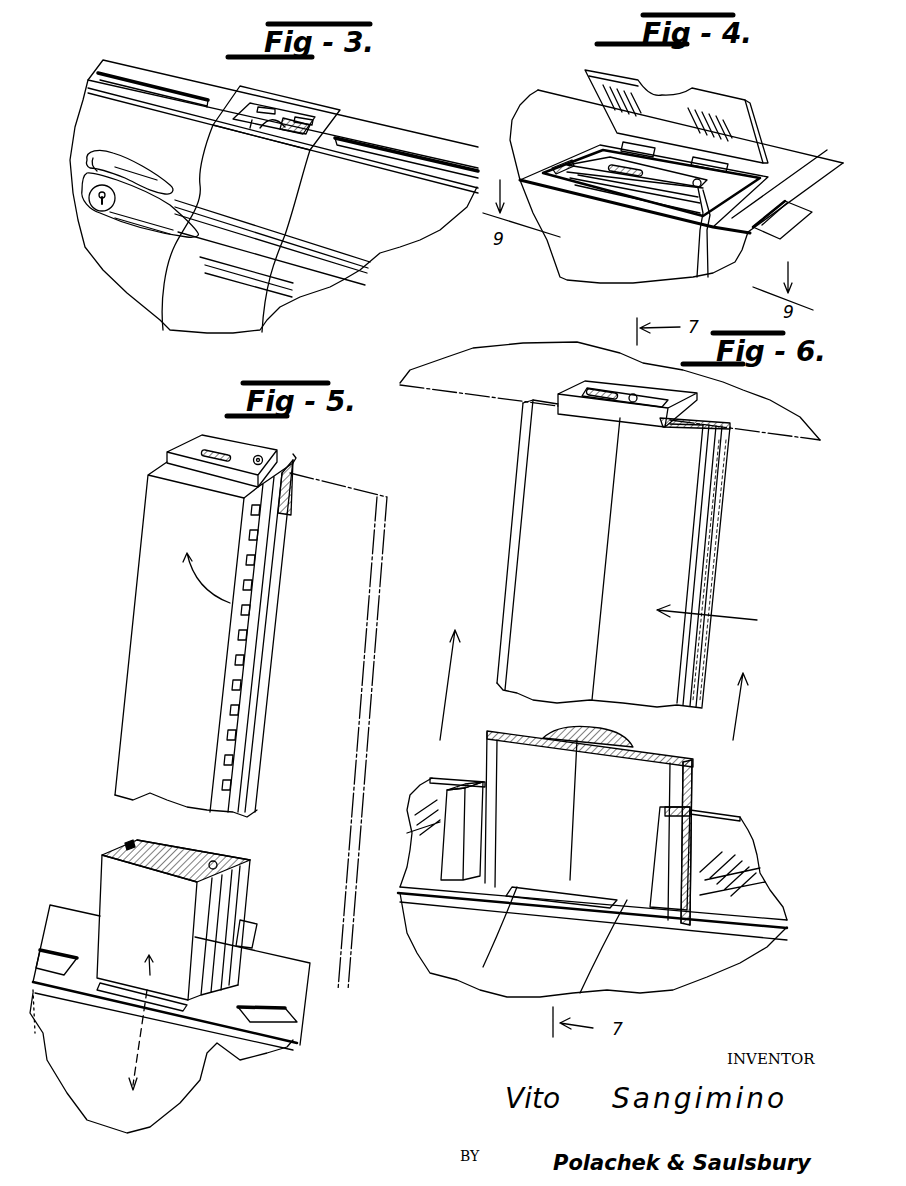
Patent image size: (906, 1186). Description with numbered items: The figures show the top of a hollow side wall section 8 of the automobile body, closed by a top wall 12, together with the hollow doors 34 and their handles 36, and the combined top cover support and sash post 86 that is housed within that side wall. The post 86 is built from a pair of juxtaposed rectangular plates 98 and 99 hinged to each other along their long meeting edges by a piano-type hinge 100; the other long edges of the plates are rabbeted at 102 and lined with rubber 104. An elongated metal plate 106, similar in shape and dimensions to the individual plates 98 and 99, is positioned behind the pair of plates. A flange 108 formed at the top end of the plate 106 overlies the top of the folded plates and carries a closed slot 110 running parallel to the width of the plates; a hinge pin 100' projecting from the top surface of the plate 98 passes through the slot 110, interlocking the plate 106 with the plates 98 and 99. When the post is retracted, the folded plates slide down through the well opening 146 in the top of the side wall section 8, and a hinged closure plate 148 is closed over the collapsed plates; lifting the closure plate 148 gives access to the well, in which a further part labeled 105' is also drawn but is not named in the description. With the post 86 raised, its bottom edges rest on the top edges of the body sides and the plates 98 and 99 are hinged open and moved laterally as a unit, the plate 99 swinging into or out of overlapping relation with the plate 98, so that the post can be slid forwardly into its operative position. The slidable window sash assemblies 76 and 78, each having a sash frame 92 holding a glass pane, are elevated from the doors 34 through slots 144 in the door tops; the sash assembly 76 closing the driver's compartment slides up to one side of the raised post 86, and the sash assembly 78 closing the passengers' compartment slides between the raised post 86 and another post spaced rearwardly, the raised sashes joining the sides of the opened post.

In FIG. 3, the side wall section 8 is at (214, 300).
In FIG. 4, the side wall section 8 is at (570, 267).
In FIG. 5, the side wall section 8 is at (142, 1115).
In FIG. 6, the side wall section 8 is at (507, 980).
In FIG. 3, the top wall 12 is at (332, 120).
In FIG. 4, the top wall 12 is at (790, 153).
In FIG. 6, the top wall 12 is at (610, 391).
In FIG. 3, the hollow door 34 is at (105, 255).
In FIG. 4, the hollow door 34 is at (525, 120).
In FIG. 5, the hollow door 34 is at (45, 1035).
In FIG. 6, the hollow door 34 is at (437, 945).
In FIG. 3, the handle 36 is at (142, 215).
In FIG. 6, the window sash assembly 76 is at (456, 758).
In FIG. 6, the window sash assembly 78 is at (747, 807).
In FIG. 5, the combined top cover support and sash post 86 is at (118, 591).
In FIG. 6, the combined top cover support and sash post 86 is at (732, 553).
In FIG. 6, the sash frame 92 is at (420, 800).
In FIG. 5, the rectangular plate 98 is at (266, 524).
In FIG. 6, the rectangular plate 98 is at (580, 500).
In FIG. 5, the rectangular plate 99 is at (143, 672).
In FIG. 6, the rectangular plate 99 is at (665, 516).
In FIG. 5, the piano-type hinge 100 is at (213, 693).
In FIG. 6, the piano-type hinge 100 is at (616, 732).
In FIG. 4, the hinge pin 100' is at (687, 228).
In FIG. 5, the hinge pin 100' is at (287, 442).
In FIG. 6, the hinge pin 100' is at (638, 373).
In FIG. 5, the rabbeted edge 102 is at (165, 838).
In FIG. 6, the rabbeted edge 102 is at (720, 483).
In FIG. 5, the rubber lining 104 is at (127, 845).
In FIG. 6, the rubber lining 104 is at (517, 497).
In FIG. 4, the plate 105' is at (638, 211).
In FIG. 5, the elongated metal plate 106 is at (257, 697).
In FIG. 6, the elongated metal plate 106 is at (700, 412).
In FIG. 4, the flange 108 is at (663, 192).
In FIG. 5, the flange 108 is at (188, 447).
In FIG. 6, the flange 108 is at (570, 392).
In FIG. 4, the closed slot 110 is at (647, 178).
In FIG. 5, the closed slot 110 is at (218, 445).
In FIG. 6, the closed slot 110 is at (603, 387).
In FIG. 3, the slot 144 is at (162, 94).
In FIG. 4, the slot 144 is at (785, 237).
In FIG. 5, the slot 144 is at (48, 962).
In FIG. 6, the slot 144 is at (417, 882).
In FIG. 3, the well opening 146 is at (281, 150).
In FIG. 4, the well opening 146 is at (580, 153).
In FIG. 5, the well opening 146 is at (190, 1010).
In FIG. 6, the well opening 146 is at (567, 900).
In FIG. 3, the closure plate 148 is at (253, 121).
In FIG. 4, the closure plate 148 is at (730, 100).
In FIG. 5, the closure plate 148 is at (258, 935).